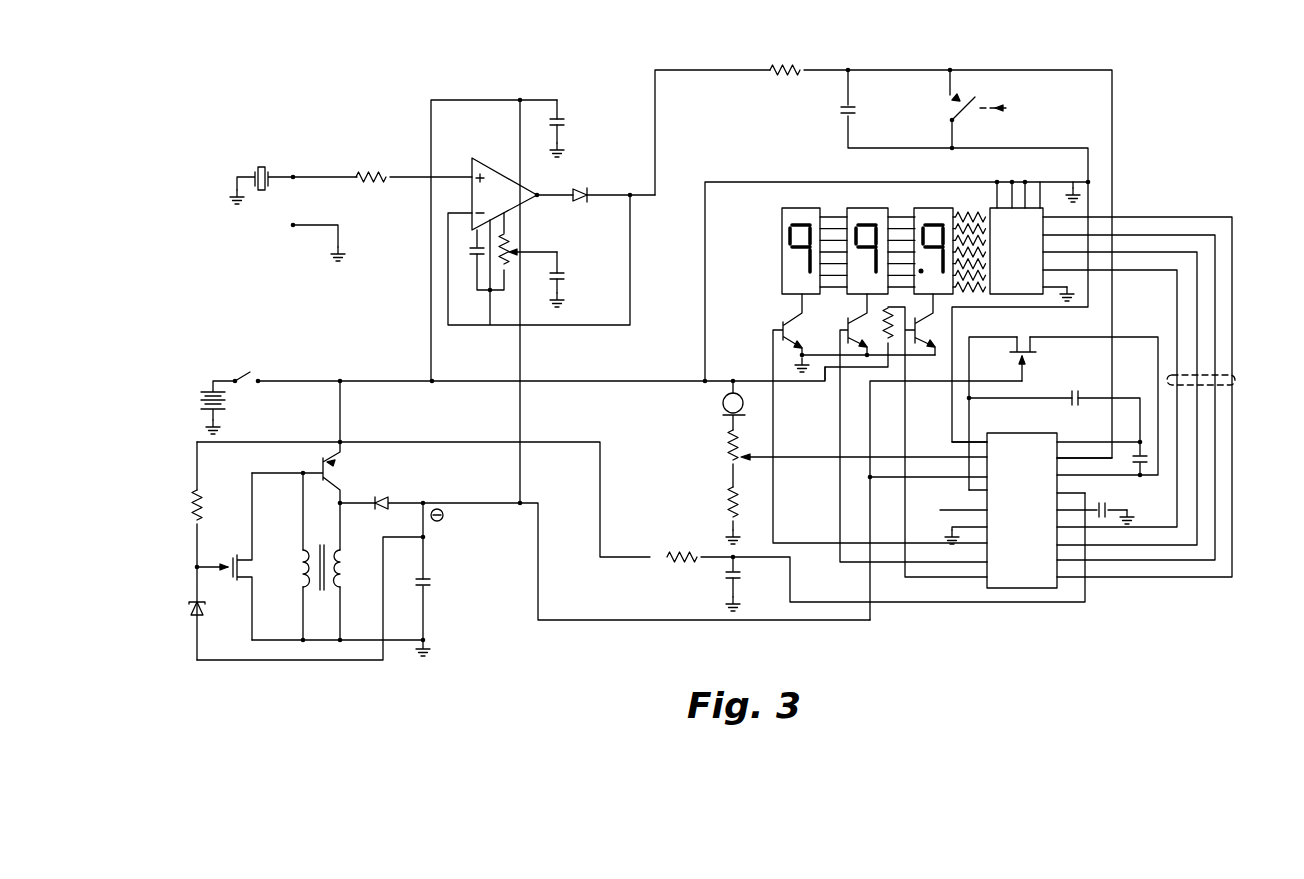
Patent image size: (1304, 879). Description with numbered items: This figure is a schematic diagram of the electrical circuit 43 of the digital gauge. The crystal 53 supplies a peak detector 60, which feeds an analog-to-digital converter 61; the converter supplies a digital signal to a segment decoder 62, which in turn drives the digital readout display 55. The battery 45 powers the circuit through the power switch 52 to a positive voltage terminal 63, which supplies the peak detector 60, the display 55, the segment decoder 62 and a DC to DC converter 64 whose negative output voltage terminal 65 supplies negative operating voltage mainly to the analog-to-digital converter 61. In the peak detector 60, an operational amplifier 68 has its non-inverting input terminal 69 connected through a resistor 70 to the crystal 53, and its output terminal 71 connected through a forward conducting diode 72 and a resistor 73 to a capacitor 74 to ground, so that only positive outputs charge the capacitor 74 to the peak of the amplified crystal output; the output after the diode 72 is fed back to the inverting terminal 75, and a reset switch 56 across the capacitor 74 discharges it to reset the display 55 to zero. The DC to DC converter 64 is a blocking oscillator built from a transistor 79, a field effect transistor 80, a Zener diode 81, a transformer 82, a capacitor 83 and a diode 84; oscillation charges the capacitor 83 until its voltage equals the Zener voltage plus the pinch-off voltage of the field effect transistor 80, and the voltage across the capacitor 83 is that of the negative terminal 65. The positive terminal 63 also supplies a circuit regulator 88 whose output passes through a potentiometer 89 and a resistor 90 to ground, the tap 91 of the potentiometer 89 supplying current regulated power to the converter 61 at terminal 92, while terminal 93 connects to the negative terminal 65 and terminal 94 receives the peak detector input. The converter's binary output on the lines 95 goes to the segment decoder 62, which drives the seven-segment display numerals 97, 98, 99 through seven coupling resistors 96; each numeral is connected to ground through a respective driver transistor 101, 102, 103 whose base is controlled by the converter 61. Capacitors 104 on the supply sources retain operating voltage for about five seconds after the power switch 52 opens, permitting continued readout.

The electrical circuit 43 is at (463, 77).
The battery 45 is at (200, 398).
The power switch 52 is at (240, 375).
The crystal 53 is at (262, 167).
The digital readout display 55 is at (878, 201).
The reset switch 56 is at (962, 117).
The peak detector 60 is at (530, 97).
The analog-to-digital converter 61 is at (1020, 583).
The segment decoder 62 is at (1043, 208).
The voltage terminal 63 is at (340, 377).
The DC to DC converter 64 is at (427, 485).
The negative output voltage terminal 65 is at (427, 502).
The operational amplifier 68 is at (507, 170).
The non-inverting input terminal 69 is at (472, 177).
The resistor 70 is at (375, 168).
The output terminal 71 is at (540, 192).
The forward conducting diode 72 is at (582, 183).
The resistor 73 is at (796, 63).
The capacitor 74 is at (855, 102).
The inverting terminal 75 is at (472, 215).
The transistor 79 is at (344, 457).
The field effect transistor 80 is at (232, 561).
The Zener diode 81 is at (190, 612).
The transformer 82 is at (332, 517).
The capacitor 83 is at (423, 580).
The diode 84 is at (397, 502).
The circuit regulator 88 is at (723, 400).
The potentiometer 89 is at (732, 437).
The resistor 90 is at (732, 505).
The tap 91 is at (762, 455).
The terminal 92 is at (988, 457).
The terminal 93 is at (988, 477).
The terminal 94 is at (1053, 458).
The lines 95 is at (1237, 373).
The coupling resistors 96 is at (983, 205).
The seven-segment display numeral 97 is at (802, 207).
The seven-segment display numeral 98 is at (867, 207).
The seven-segment display numeral 99 is at (937, 207).
The driver transistor 101 is at (778, 317).
The driver transistor 102 is at (850, 321).
The driver transistor 103 is at (926, 316).
The capacitors 104 is at (562, 120).